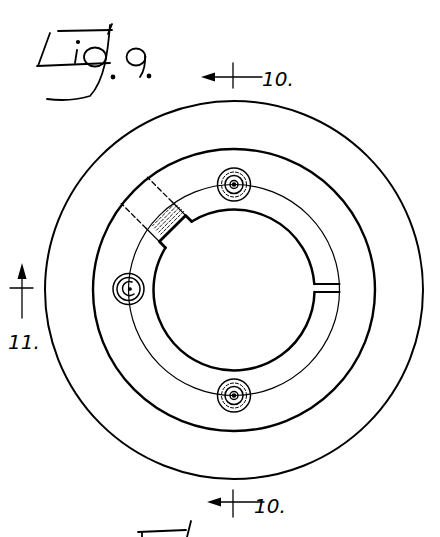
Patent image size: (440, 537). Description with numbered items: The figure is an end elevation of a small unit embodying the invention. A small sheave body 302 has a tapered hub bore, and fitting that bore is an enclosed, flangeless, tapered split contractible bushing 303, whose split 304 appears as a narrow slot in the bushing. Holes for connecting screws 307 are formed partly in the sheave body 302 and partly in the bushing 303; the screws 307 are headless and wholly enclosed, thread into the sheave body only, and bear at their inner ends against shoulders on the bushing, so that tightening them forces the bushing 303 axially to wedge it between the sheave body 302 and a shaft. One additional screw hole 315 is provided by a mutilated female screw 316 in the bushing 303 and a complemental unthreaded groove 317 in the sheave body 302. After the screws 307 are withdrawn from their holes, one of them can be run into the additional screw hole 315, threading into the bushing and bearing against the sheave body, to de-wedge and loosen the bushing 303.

The sheave body 302 is at (350, 147).
The tapered split contractible bushing 303 is at (191, 358).
The split 304 is at (324, 284).
The connecting screws 307 is at (241, 171).
The additional screw hole 315 is at (114, 283).
The mutilated female screw 316 is at (144, 288).
The unthreaded groove 317 is at (124, 297).